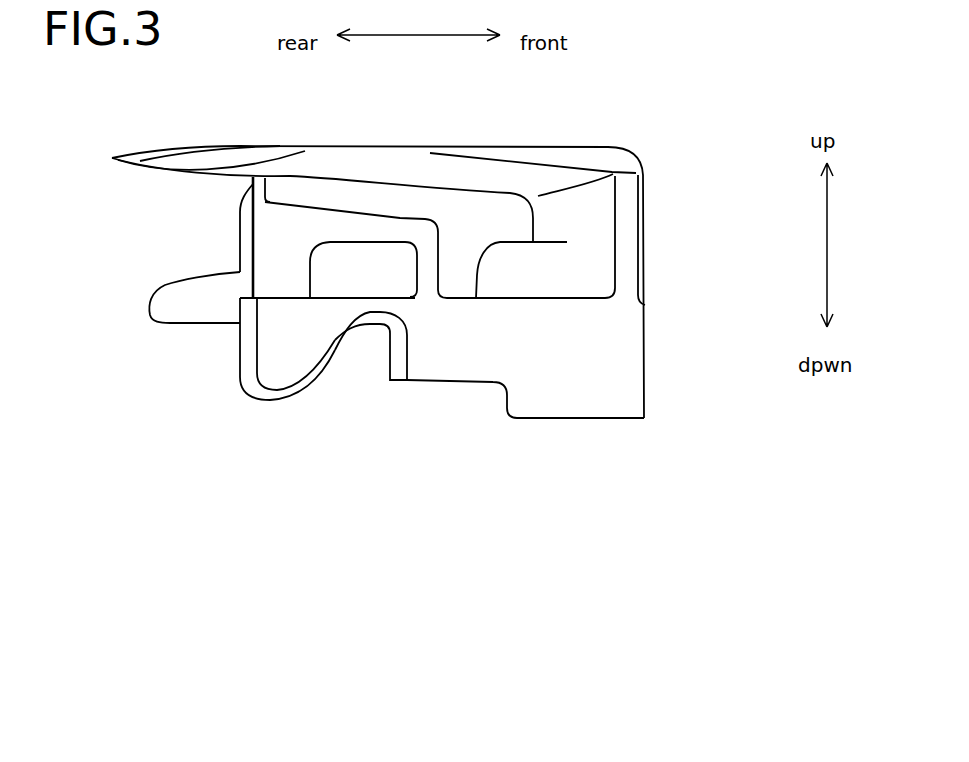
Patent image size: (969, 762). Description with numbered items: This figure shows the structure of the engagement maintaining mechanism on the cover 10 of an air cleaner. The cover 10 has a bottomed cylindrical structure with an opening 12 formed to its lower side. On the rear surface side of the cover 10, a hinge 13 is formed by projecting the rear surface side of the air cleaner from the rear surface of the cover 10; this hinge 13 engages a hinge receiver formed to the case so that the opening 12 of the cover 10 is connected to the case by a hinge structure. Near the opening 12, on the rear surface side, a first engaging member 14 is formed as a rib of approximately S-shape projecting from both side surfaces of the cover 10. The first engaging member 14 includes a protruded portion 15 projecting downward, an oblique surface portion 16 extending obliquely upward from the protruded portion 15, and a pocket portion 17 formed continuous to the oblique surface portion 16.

The cover 10 is at (667, 70).
The opening 12 is at (589, 420).
The hinge 13 is at (160, 305).
The first engaging member 14 is at (200, 445).
The protruded portion 15 is at (270, 400).
The oblique surface portion 16 is at (303, 384).
The pocket portion 17 is at (375, 325).